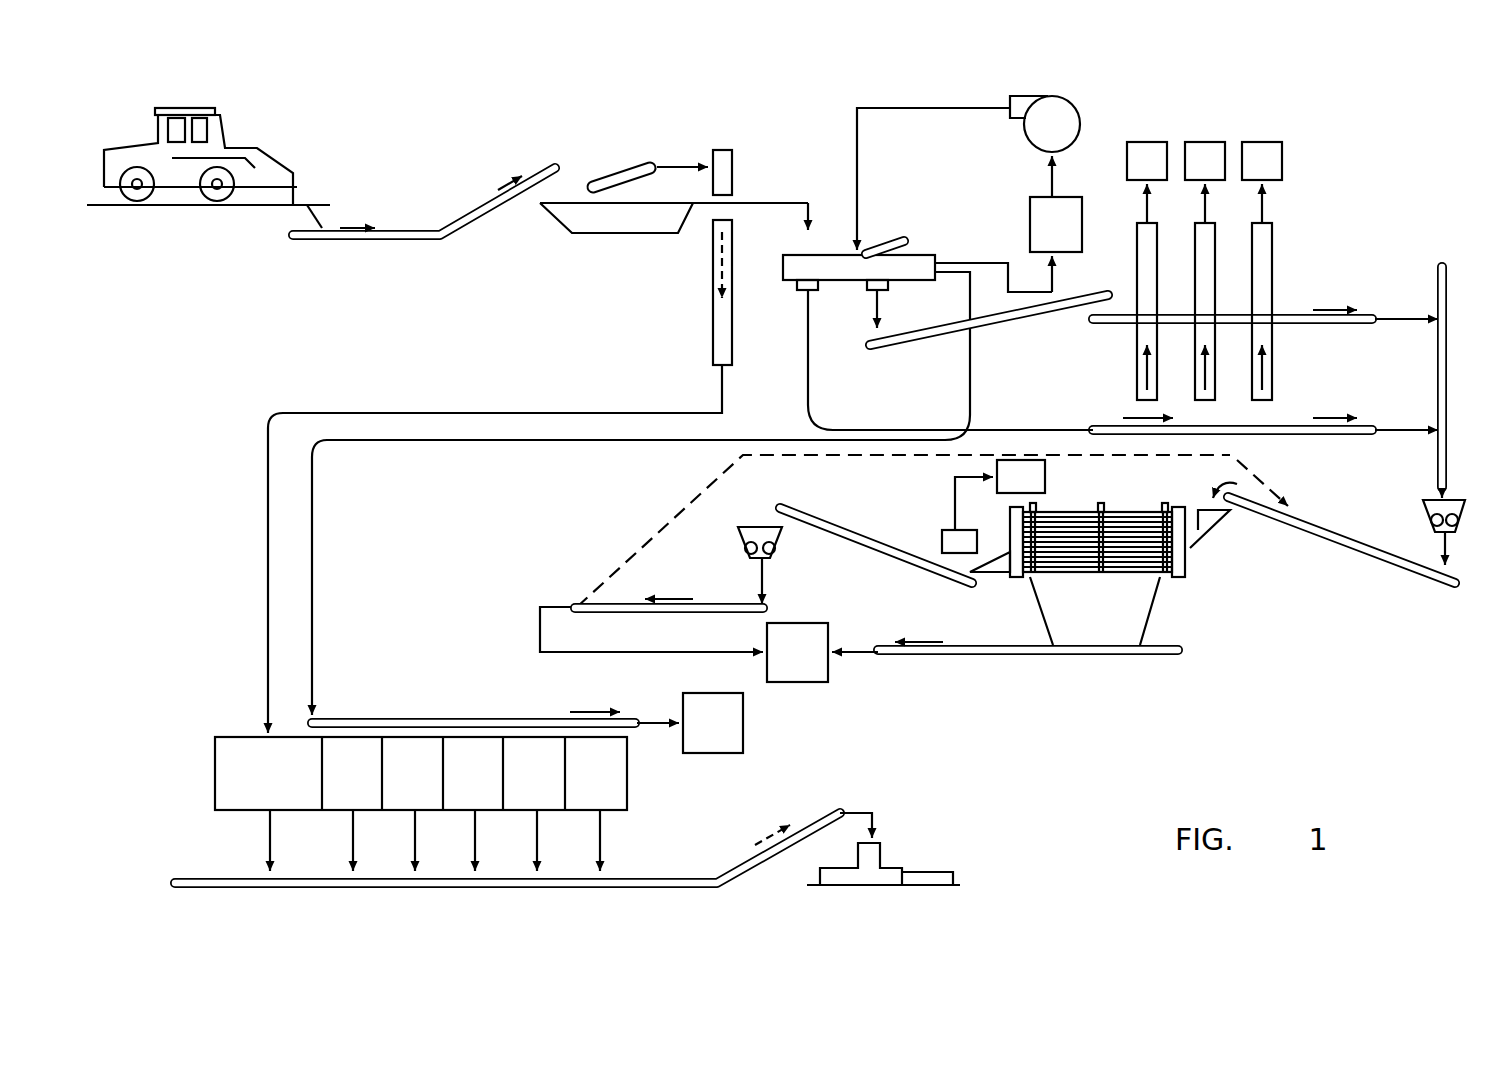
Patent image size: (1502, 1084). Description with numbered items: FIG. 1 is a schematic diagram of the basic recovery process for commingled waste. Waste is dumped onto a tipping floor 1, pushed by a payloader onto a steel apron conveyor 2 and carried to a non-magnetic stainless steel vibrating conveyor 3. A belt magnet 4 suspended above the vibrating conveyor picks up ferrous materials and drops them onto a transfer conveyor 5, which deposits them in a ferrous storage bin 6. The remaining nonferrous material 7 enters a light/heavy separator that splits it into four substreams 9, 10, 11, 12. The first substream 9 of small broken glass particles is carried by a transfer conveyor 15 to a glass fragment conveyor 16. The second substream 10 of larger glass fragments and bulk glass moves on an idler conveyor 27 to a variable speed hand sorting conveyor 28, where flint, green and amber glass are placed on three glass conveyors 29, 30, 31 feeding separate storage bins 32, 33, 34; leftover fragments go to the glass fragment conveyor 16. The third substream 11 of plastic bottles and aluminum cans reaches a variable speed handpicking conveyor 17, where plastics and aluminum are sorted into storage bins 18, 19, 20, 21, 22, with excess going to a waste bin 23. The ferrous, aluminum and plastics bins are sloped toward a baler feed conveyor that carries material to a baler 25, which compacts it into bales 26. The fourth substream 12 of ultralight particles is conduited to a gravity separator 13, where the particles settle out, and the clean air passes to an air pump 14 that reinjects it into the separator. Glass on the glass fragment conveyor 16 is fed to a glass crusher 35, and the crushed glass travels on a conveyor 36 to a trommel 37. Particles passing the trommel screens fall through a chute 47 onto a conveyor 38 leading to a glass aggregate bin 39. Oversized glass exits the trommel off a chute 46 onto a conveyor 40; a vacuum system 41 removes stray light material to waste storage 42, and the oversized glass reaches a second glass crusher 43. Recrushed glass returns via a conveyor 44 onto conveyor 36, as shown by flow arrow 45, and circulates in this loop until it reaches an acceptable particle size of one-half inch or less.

The tipping floor 1 is at (310, 215).
The steel apron conveyor 2 is at (365, 240).
The non-magnetic stainless steel vibrating conveyor 3 is at (575, 223).
The belt magnet 4 is at (637, 165).
The transfer conveyor 5 is at (713, 300).
The ferrous storage bin 6 is at (242, 745).
The nonferrous material 7 is at (768, 203).
The first substream 9 is at (808, 322).
The second substream 10 is at (877, 305).
The third substream 11 is at (970, 368).
The fourth substream 12 is at (1053, 287).
The gravity separator 13 is at (1065, 202).
The air pump 14 is at (1072, 118).
The transfer conveyor 15 is at (1268, 423).
The glass fragment conveyor 16 is at (1440, 385).
The variable speed handpicking conveyor 17 is at (337, 717).
The storage bin 18 is at (338, 798).
The storage bin 19 is at (398, 797).
The storage bin 20 is at (453, 798).
The aluminum storage bin 21 is at (550, 797).
The storage bin 22 is at (613, 795).
The waste bin 23 is at (707, 703).
The baler 25 is at (893, 860).
The bales 26 is at (930, 875).
The idler conveyor 27 is at (1032, 312).
The variable speed hand sorting conveyor 28 is at (1115, 323).
The glass conveyor 29 is at (1137, 302).
The glass conveyor 30 is at (1237, 307).
The glass conveyor 31 is at (1265, 336).
The storage bin 32 is at (1133, 143).
The storage bin 33 is at (1202, 145).
The storage bin 34 is at (1255, 147).
The glass crusher 35 is at (1423, 508).
The conveyor 36 is at (1355, 552).
The trommel 37 is at (1147, 553).
The conveyor 38 is at (1098, 653).
The glass aggregate bin 39 is at (818, 672).
The conveyor 40 is at (798, 512).
The vacuum system 41 is at (950, 540).
The waste storage 42 is at (1045, 478).
The second glass crusher 43 is at (738, 535).
The conveyor 44 is at (630, 603).
The flow arrow 45 is at (1262, 470).
The chute 46 is at (993, 567).
The chute 47 is at (1132, 612).